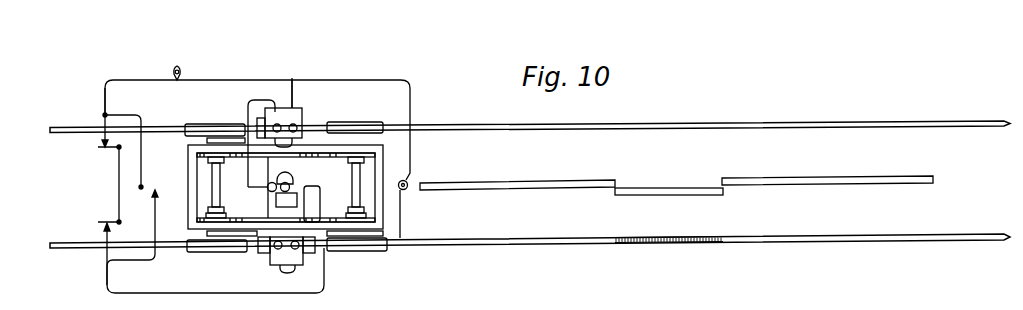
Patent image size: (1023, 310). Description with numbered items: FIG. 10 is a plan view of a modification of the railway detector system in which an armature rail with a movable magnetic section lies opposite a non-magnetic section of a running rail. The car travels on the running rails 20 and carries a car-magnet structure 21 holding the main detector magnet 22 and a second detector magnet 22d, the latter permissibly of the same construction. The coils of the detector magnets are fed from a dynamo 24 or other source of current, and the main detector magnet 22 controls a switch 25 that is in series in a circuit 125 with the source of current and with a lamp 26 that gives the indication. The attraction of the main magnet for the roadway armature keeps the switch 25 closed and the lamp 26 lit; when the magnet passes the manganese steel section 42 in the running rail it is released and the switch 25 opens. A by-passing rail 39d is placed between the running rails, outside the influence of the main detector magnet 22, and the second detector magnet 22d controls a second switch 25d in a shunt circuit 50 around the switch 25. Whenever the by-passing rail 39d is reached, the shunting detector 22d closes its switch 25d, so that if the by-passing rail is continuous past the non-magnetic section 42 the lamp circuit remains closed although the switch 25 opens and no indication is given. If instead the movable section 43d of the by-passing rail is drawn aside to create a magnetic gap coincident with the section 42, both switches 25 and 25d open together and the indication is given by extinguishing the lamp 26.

The rails 20 is at (860, 113).
The frame 21 is at (384, 172).
The main detector magnet 22 is at (303, 120).
The second detector magnet 22d is at (304, 184).
The dynamo 24 is at (413, 181).
The switch 25 is at (96, 184).
The second switch 25d is at (167, 182).
The lamp 26 is at (181, 70).
The by-passing rail 39d is at (830, 177).
The manganese steel section 42 is at (669, 250).
The movable section 43d is at (640, 195).
The shunt circuit 50 is at (128, 112).
The circuit 125 is at (292, 78).